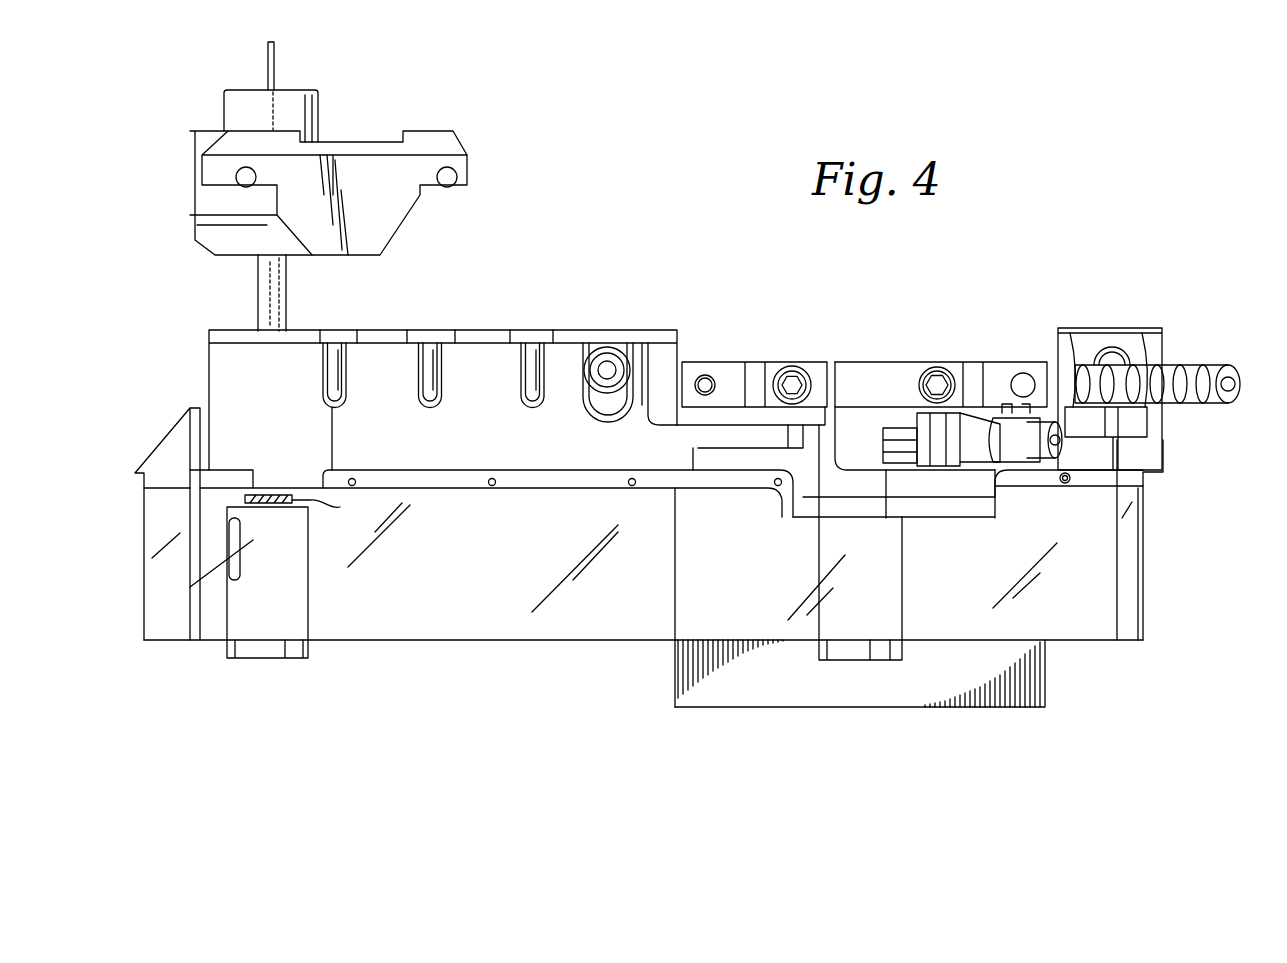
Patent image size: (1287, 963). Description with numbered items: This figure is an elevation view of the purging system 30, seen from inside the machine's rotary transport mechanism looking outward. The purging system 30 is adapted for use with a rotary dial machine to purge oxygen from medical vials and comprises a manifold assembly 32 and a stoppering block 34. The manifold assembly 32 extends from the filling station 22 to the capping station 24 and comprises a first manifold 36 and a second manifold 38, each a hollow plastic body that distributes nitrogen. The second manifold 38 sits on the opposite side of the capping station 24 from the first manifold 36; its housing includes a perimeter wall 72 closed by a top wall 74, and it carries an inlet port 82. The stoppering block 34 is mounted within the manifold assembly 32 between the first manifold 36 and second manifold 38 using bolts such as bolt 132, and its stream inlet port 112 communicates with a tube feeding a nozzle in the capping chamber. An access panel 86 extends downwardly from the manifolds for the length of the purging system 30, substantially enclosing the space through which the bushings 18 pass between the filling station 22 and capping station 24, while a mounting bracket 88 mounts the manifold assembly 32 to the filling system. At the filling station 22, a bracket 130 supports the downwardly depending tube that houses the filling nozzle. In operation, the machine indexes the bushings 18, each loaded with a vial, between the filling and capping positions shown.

The bushing 18 is at (258, 650).
The filling station 22 is at (394, 103).
The capping station 24 is at (891, 284).
The purging system 30 is at (1056, 218).
The manifold assembly 32 is at (673, 287).
The stoppering block 34 is at (941, 335).
The first manifold 36 is at (389, 318).
The second manifold 38 is at (1172, 455).
The perimeter wall 72 is at (1132, 424).
The top wall 74 is at (1112, 327).
The inlet port 82 is at (1128, 355).
The access panel 86 is at (448, 623).
The mounting bracket 88 is at (733, 692).
The stream inlet port 112 is at (1065, 443).
The bracket 130 is at (462, 192).
The bolt 132 is at (262, 295).